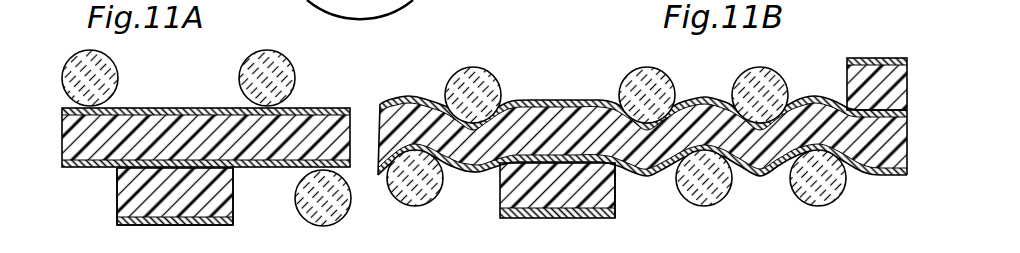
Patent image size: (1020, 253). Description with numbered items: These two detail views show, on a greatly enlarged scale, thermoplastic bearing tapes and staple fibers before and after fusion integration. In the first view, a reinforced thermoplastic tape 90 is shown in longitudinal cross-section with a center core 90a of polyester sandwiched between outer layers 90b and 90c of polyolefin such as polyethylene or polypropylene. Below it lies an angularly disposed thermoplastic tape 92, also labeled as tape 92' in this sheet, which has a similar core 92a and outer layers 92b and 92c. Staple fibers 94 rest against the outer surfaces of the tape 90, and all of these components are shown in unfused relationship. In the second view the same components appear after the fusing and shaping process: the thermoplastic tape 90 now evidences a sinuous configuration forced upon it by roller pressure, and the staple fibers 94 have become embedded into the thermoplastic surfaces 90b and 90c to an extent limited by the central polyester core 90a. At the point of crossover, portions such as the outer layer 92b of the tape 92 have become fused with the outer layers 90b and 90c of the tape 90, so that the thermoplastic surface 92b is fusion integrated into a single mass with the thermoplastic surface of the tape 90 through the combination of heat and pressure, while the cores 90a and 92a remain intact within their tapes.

In FIG. 11A, the reinforced thermoplastic tape 90 is at (206, 158).
In FIG. 11B, the reinforced thermoplastic tape 90 is at (642, 124).
In FIG. 11A, the center core 90a is at (92, 168).
In FIG. 11B, the center core 90a is at (426, 100).
In FIG. 11A, the outer layer 90b is at (194, 109).
In FIG. 11B, the outer layer 90b is at (403, 94).
In FIG. 11A, the outer layer 90c is at (288, 168).
In FIG. 11B, the outer layer 90c is at (478, 175).
In FIG. 11A, the angularly disposed thermoplastic tape 92 is at (166, 210).
In FIG. 11B, the angularly disposed thermoplastic tape 92 is at (593, 199).
In FIG. 11A, the second electronic component 92' is at (143, 237).
In FIG. 11A, the core 92a is at (229, 202).
In FIG. 11A, the outer layer 92b is at (116, 171).
In FIG. 11B, the outer layer 92b is at (614, 183).
In FIG. 11A, the outer layer 92c is at (198, 226).
In FIG. 11A, the staple fibers 94 is at (123, 79).
In FIG. 11B, the staple fibers 94 is at (499, 73).